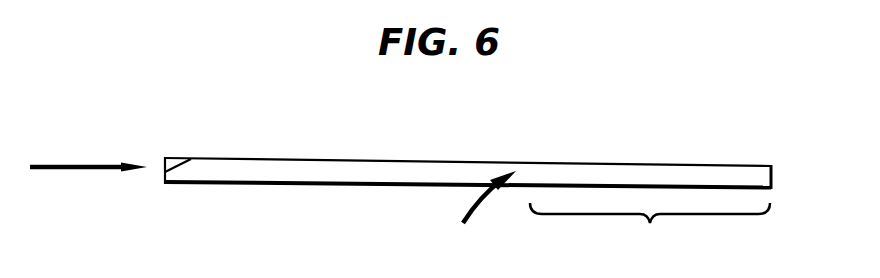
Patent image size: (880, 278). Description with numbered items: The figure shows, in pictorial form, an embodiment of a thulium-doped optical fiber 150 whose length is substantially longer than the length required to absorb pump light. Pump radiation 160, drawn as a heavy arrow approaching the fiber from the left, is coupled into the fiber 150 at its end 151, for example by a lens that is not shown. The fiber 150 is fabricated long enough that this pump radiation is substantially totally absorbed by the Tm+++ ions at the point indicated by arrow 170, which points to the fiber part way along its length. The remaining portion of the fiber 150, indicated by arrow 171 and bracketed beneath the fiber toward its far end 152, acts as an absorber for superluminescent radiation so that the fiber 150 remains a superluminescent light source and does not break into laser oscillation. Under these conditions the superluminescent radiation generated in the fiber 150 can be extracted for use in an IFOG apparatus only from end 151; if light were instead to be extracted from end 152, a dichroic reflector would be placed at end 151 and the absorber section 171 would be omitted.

The Tm+++ doped optical fiber 150 is at (332, 161).
The end 151 is at (186, 160).
The end 152 is at (772, 175).
The pump radiation 160 is at (80, 165).
The arrow 170 is at (480, 211).
The arrow 171 is at (650, 230).